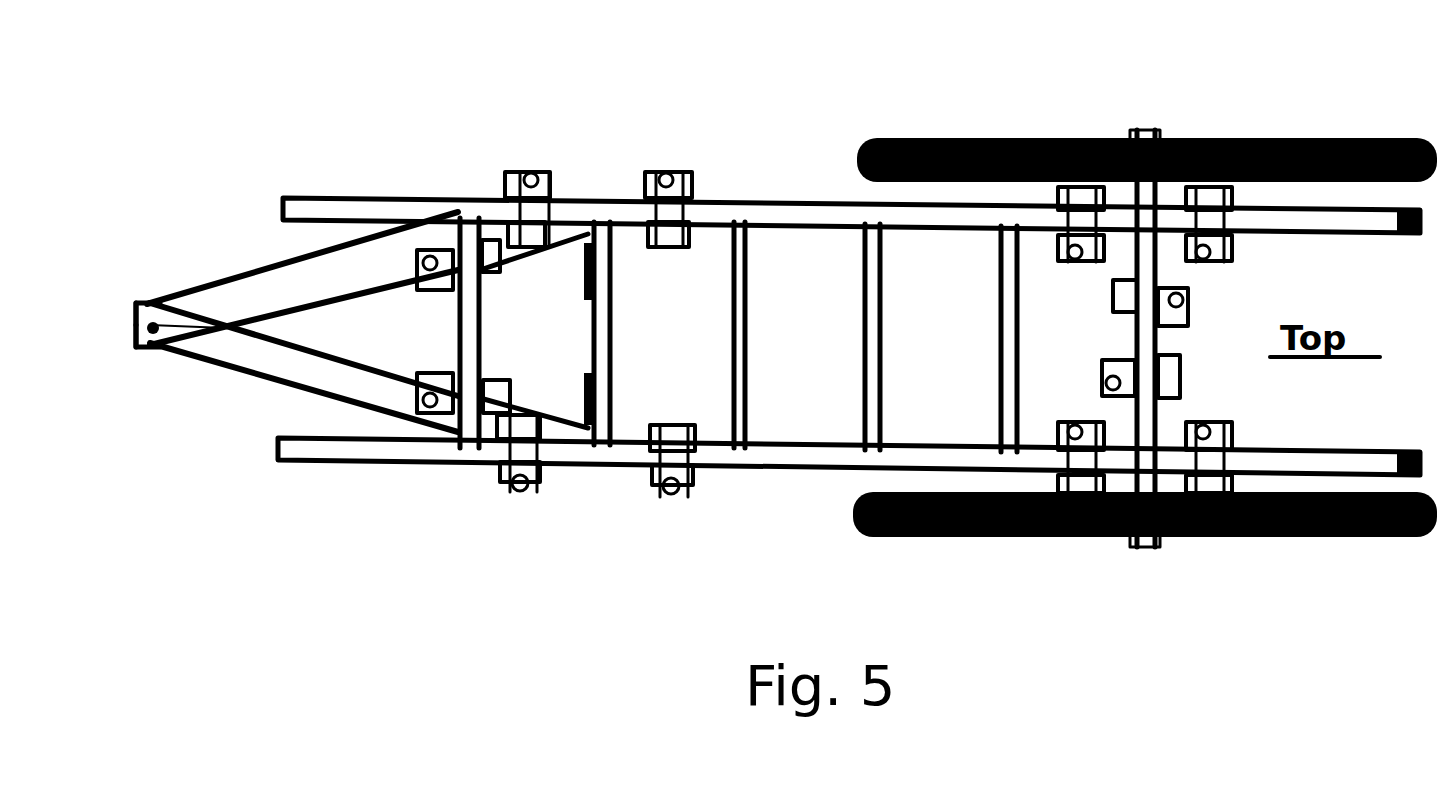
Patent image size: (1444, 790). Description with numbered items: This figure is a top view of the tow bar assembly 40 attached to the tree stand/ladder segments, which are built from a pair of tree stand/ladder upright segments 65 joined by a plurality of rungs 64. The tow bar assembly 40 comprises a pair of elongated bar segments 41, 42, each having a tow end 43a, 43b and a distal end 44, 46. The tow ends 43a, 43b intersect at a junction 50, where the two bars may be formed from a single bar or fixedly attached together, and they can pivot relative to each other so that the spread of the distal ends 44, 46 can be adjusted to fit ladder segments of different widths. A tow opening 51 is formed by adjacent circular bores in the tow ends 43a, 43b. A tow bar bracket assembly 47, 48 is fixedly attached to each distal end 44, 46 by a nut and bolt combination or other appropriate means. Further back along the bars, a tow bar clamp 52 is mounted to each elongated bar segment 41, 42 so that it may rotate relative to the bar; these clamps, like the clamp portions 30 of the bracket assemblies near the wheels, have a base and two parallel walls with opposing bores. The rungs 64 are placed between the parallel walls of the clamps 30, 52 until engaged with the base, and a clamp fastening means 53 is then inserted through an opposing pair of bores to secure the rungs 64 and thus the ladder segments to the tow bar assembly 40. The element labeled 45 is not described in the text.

The clamp 30 is at (1185, 295).
The tow bar assembly 40 is at (228, 272).
The elongated bar segment 41 is at (203, 288).
The elongated bar segment 42 is at (247, 380).
The tow end 43a is at (145, 298).
The tow end 43b is at (125, 340).
The distal end 44 is at (610, 193).
The pivot connection 45 is at (165, 347).
The distal end 46 is at (610, 472).
The tow bar bracket assembly 47 is at (633, 193).
The tow bar bracket assembly 48 is at (573, 470).
The junction 50 is at (140, 353).
The tow opening 51 is at (152, 340).
The tow bar clamp 52 is at (495, 245).
The clamp fastening means 53 is at (522, 177).
The rungs 64 is at (1133, 332).
The tree stand/ladder upright segments 65 is at (778, 203).